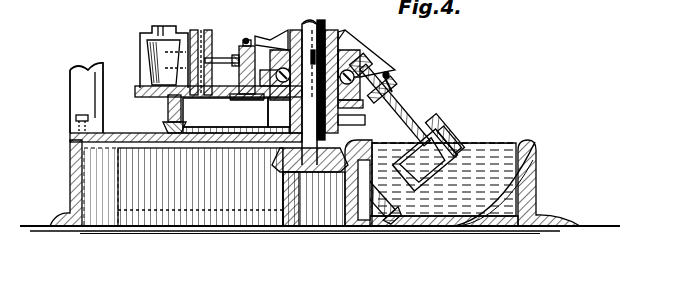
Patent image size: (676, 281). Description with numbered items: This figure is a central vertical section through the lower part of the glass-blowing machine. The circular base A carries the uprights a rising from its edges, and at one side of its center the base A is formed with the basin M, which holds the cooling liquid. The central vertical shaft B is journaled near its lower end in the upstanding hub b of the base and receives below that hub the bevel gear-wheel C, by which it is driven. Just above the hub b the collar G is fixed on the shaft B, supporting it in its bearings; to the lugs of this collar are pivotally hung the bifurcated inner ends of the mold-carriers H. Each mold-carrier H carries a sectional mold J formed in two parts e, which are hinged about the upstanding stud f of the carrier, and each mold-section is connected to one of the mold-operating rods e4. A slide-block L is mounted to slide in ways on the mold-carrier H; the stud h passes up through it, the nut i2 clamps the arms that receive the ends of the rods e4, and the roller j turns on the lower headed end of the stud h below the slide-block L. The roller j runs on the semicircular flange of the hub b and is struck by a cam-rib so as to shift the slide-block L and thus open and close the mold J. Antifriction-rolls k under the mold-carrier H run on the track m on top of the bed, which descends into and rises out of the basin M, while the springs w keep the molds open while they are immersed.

The base A is at (315, 170).
The uprights a is at (97, 91).
The central vertical shaft B is at (322, 22).
The upstanding hub b is at (290, 113).
The bevel gear-wheel C is at (277, 168).
The mold parts e is at (302, 108).
The mold-operating rods e4 is at (408, 98).
The upstanding stud f is at (452, 114).
The collar G is at (303, 22).
The mold-carriers H is at (356, 168).
The stud h is at (246, 40).
The nut i2 is at (392, 79).
The sectional molds J is at (139, 60).
The roller j is at (309, 73).
The antifriction-rolls k is at (167, 108).
The slide-block L is at (252, 96).
The basin M is at (500, 136).
The track m is at (186, 142).
The springs w is at (259, 42).